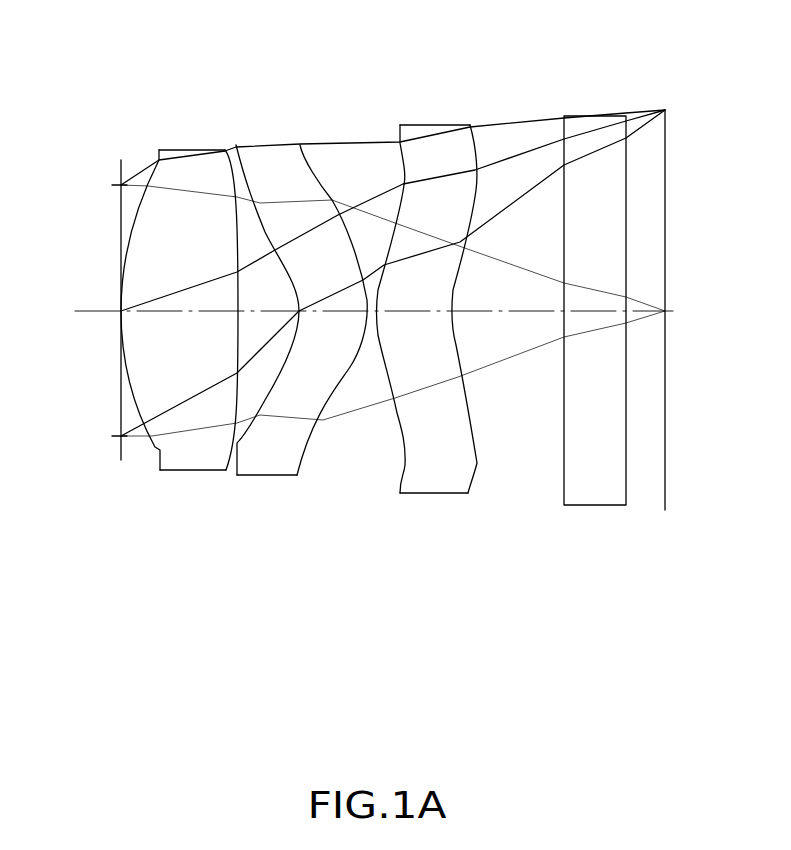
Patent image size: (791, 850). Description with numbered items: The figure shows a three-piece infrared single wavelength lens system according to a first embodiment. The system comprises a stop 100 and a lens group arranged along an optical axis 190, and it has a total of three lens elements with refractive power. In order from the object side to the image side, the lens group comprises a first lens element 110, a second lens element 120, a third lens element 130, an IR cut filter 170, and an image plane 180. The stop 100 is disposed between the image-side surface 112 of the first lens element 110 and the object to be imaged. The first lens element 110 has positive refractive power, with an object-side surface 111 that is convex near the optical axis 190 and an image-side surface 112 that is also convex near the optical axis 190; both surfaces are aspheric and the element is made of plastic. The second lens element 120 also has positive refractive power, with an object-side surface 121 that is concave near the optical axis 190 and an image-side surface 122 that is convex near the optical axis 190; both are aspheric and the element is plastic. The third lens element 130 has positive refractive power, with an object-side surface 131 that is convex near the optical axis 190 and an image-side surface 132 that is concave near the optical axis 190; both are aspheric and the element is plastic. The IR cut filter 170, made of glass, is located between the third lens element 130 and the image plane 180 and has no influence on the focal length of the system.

The stop 100 is at (120, 168).
The first lens element 110 is at (179, 324).
The object-side surface 111 is at (152, 455).
The image-side surface 112 is at (236, 436).
The second lens element 120 is at (288, 321).
The object-side surface 121 is at (240, 446).
The image-side surface 122 is at (318, 436).
The third lens element 130 is at (425, 313).
The object-side surface 131 is at (397, 413).
The image-side surface 132 is at (477, 465).
The IR cut filter 170 is at (591, 113).
The image plane 180 is at (665, 443).
The optical axis 190 is at (82, 309).